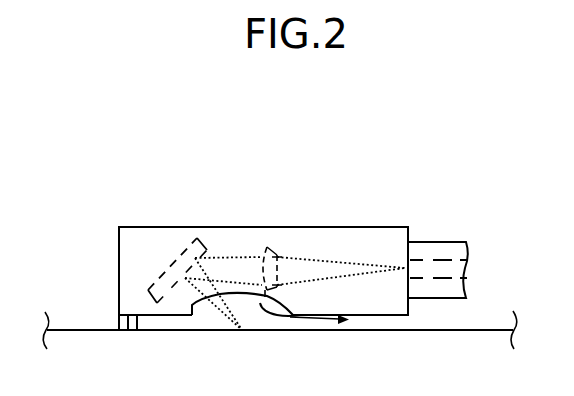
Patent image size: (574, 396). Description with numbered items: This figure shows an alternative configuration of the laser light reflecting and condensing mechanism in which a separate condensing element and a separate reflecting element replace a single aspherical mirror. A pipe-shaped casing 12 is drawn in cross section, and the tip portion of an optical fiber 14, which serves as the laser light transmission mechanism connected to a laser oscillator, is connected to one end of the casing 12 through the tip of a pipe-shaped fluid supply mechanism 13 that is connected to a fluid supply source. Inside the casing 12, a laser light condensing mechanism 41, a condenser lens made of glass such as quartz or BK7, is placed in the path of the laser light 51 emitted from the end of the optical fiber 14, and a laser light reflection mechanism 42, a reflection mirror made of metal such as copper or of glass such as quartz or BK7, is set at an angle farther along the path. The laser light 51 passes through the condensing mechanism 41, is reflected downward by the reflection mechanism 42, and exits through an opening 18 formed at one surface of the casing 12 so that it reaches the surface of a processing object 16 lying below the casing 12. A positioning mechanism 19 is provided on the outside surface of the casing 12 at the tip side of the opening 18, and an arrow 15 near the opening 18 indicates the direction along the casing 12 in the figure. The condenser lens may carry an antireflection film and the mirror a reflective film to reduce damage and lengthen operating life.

The casing 12 is at (367, 235).
The fluid supply mechanism 13 is at (413, 241).
The optical fiber 14 is at (442, 259).
The light emission direction arrow 15 is at (308, 320).
The processing object 16 is at (87, 332).
The opening 18 is at (200, 314).
The positioning mechanism 19 is at (127, 332).
The laser light condensing mechanism 41 is at (267, 244).
The laser light reflection mechanism 42 is at (189, 249).
The laser light 51 is at (320, 267).